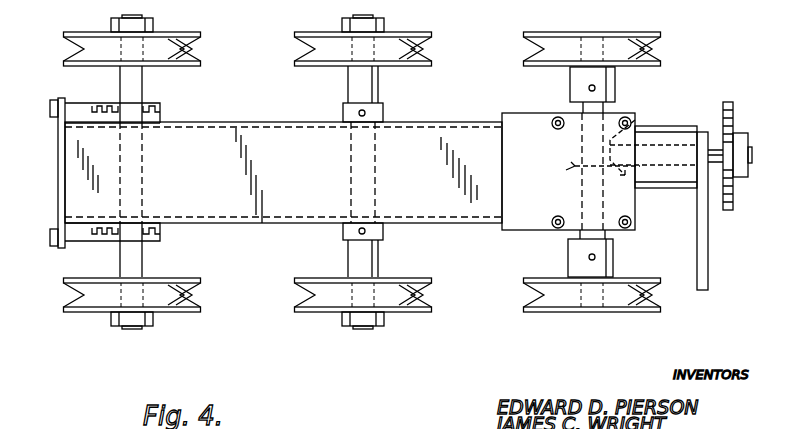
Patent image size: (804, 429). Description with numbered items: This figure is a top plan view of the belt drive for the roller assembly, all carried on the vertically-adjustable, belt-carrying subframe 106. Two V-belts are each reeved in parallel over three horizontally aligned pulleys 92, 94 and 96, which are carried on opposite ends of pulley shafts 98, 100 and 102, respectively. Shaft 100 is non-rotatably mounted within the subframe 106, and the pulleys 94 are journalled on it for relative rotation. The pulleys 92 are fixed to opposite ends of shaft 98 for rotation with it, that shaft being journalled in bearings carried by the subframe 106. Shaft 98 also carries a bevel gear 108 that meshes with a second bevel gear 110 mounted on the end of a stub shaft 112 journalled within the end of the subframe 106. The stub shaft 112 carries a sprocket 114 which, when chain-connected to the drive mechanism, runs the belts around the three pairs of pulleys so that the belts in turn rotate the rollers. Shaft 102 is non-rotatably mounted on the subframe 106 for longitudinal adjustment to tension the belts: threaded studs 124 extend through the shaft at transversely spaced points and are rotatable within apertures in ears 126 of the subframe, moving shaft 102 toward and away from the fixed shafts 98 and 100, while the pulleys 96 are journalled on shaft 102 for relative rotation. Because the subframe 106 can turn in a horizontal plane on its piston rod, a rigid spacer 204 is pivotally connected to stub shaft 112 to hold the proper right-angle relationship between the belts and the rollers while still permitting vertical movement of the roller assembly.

The pulleys 92 is at (611, 35).
The pulleys 94 is at (403, 33).
The pulleys 96 is at (179, 33).
The pulley shaft 98 is at (582, 108).
The pulley shaft 100 is at (373, 92).
The pulley shaft 102 is at (144, 93).
The subframe 106 is at (441, 216).
The bevel gear 108 is at (566, 170).
The second bevel gear 110 is at (637, 127).
The stub shaft 112 is at (714, 148).
The sprocket 114 is at (733, 196).
The threaded studs 124 is at (86, 104).
The ears 126 is at (57, 116).
The rigid spacer 204 is at (708, 273).